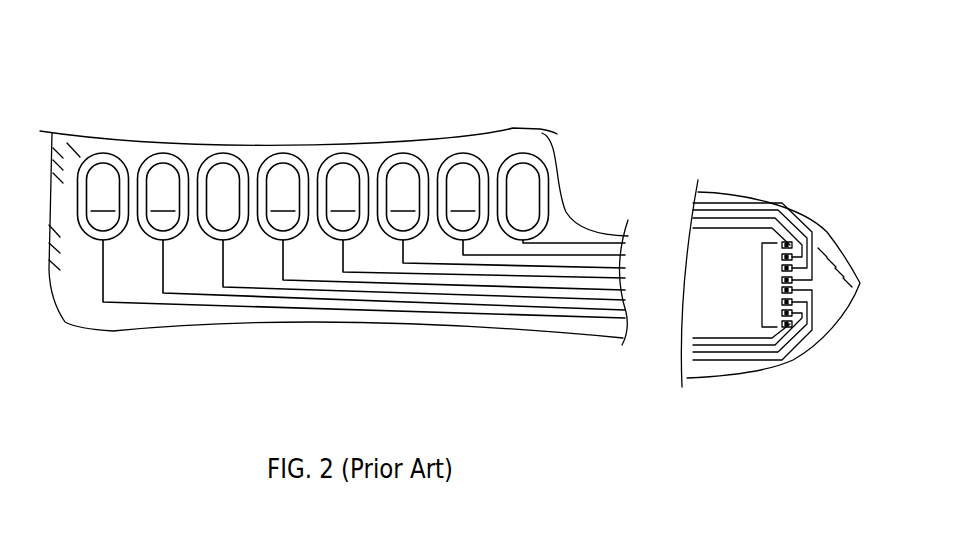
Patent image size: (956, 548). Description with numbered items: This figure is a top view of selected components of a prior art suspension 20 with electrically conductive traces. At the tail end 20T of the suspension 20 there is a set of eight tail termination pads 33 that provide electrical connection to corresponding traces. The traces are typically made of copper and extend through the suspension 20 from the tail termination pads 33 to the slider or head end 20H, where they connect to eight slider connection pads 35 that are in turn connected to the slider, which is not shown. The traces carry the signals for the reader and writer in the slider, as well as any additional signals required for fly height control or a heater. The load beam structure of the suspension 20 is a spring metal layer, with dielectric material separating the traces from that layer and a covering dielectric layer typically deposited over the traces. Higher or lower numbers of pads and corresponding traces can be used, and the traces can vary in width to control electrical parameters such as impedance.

The suspension 20 is at (133, 109).
The tail end of the suspension 20T is at (102, 313).
The slider (or head) end of the suspension 20H is at (802, 203).
The tail termination pads 33 is at (225, 172).
The slider connection pads 35 is at (762, 285).